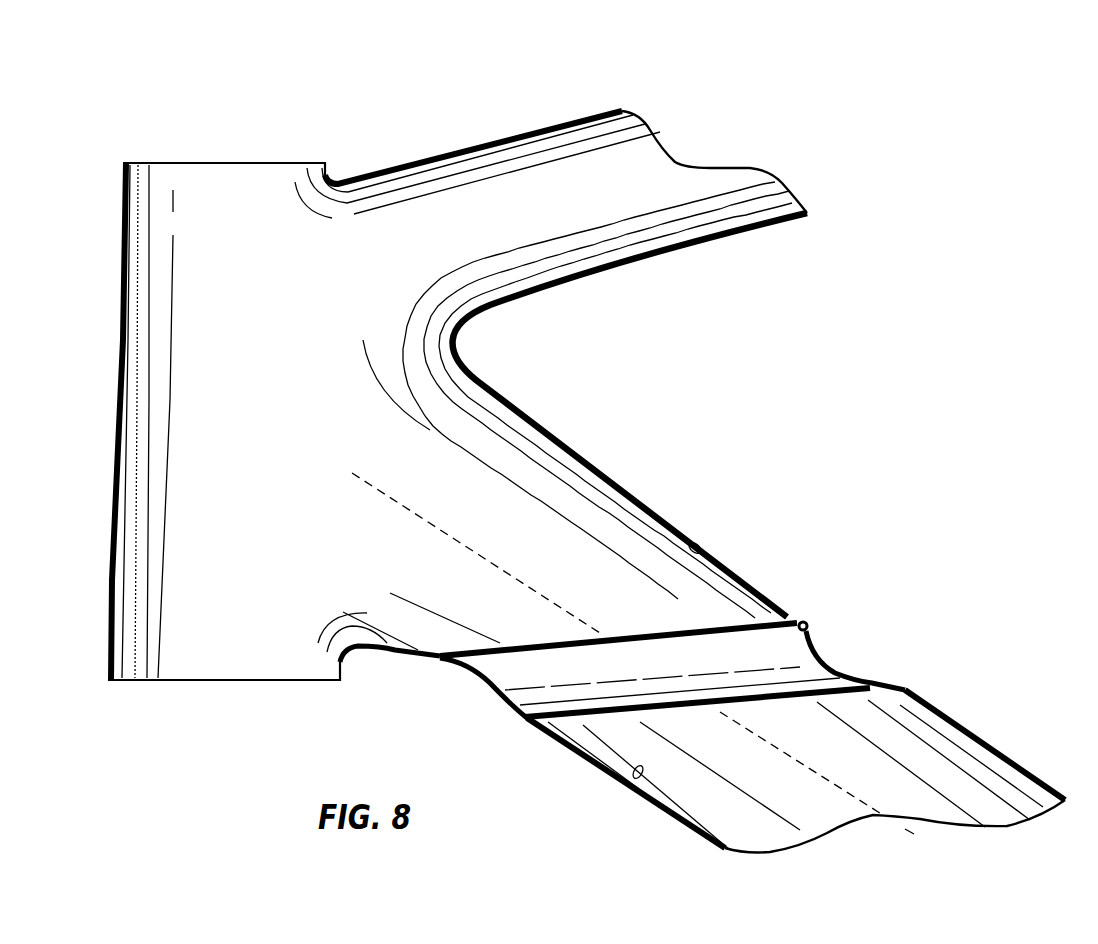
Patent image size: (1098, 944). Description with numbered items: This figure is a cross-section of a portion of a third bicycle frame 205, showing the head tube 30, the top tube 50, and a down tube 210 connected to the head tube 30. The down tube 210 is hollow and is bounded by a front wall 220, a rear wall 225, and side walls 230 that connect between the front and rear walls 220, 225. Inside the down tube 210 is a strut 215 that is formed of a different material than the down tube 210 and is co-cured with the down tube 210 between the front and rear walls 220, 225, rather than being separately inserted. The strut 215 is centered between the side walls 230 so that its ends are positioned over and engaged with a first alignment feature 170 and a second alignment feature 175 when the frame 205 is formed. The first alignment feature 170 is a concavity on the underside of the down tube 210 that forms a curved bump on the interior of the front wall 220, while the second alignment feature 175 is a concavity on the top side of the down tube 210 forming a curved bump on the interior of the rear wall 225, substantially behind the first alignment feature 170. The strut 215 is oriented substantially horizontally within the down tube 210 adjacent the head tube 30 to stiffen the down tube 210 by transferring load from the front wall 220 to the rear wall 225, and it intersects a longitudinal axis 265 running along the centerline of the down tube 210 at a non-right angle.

The third bicycle frame 205 is at (109, 71).
The head tube 30 is at (121, 362).
The top tube 50 is at (452, 150).
The down tube 210 is at (650, 504).
The rear wall 225 is at (702, 551).
The strut 215 is at (715, 632).
The first alignment feature 170 is at (480, 688).
The second alignment feature 175 is at (827, 665).
The front wall 220 is at (638, 776).
The side walls 230 is at (830, 821).
The longitudinal axis 265 is at (900, 825).